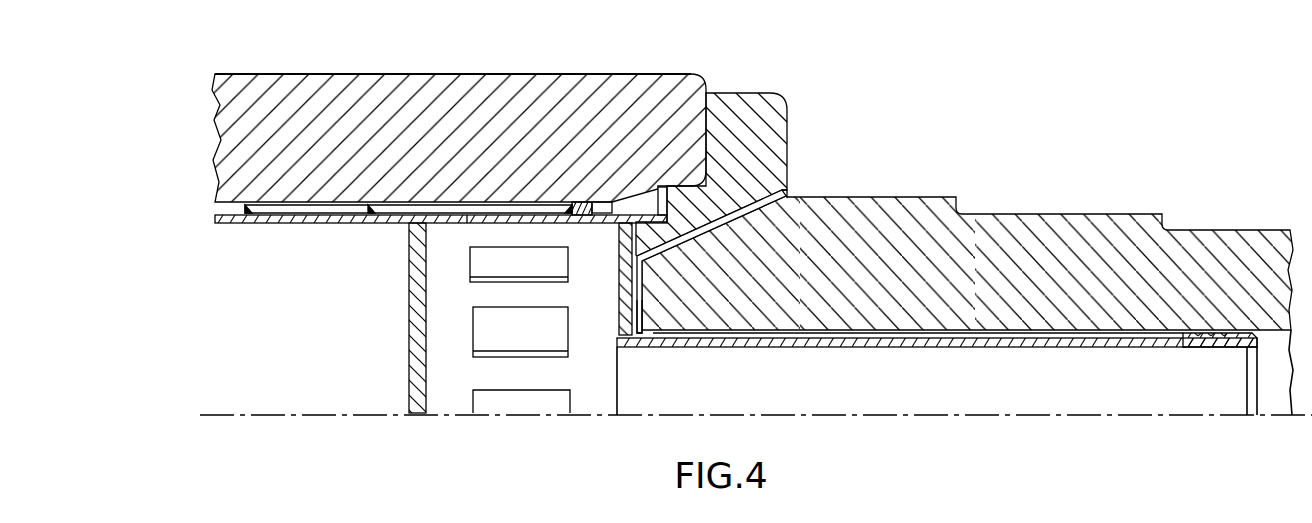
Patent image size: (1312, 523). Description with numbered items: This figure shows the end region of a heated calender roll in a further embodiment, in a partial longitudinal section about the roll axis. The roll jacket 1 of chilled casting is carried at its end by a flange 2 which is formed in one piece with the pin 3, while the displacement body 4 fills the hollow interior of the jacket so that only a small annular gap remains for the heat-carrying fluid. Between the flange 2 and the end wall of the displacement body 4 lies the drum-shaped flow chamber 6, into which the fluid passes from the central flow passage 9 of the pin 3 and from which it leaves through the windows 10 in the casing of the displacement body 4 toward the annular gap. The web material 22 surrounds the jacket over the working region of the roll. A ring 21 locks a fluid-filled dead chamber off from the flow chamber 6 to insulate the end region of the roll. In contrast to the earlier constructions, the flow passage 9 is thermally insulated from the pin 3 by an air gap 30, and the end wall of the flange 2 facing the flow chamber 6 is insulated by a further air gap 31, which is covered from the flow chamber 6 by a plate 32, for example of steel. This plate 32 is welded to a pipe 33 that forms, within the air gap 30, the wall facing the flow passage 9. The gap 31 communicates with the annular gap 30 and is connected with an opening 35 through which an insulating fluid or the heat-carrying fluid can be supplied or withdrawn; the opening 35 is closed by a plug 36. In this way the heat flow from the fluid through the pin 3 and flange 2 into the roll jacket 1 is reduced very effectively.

The roll jacket 1 is at (631, 94).
The flange 2 is at (768, 107).
The pin 3 is at (972, 225).
The displacement body 4 is at (416, 310).
The flow chamber 6 is at (586, 385).
The flow passage 9 is at (1097, 398).
The windows 10 is at (492, 342).
The ring 21 is at (592, 225).
The web material 22 is at (390, 74).
The air gap 30 is at (950, 347).
The air gap 31 is at (652, 333).
The plate 32 is at (628, 287).
The pipe 33 is at (760, 347).
The opening 35 is at (780, 188).
The plug 36 is at (790, 197).